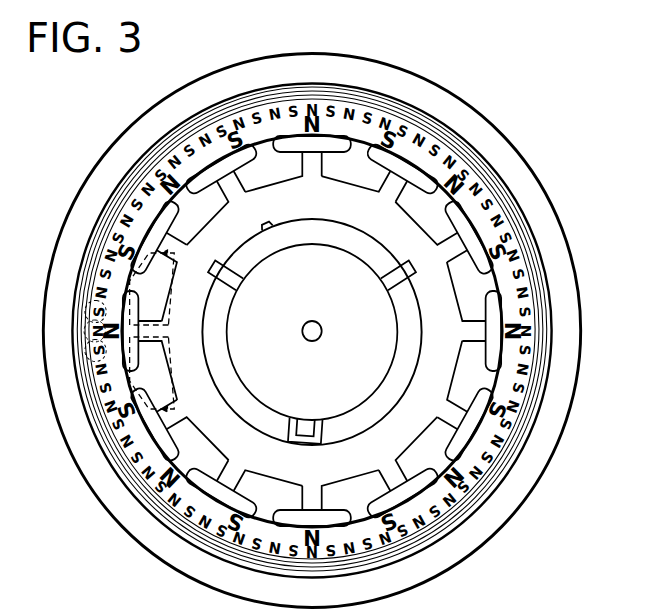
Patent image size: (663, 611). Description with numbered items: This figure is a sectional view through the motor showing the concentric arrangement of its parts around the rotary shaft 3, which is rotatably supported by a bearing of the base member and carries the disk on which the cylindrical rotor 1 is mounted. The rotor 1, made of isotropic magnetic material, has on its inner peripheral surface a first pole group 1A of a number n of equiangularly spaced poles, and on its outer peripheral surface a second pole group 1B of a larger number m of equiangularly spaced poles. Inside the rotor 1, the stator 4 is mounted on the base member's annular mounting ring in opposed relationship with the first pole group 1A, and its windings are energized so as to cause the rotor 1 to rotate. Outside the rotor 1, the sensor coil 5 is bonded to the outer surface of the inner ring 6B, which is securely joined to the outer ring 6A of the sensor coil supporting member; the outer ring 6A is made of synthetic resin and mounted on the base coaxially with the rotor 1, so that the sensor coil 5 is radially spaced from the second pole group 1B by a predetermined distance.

The cylindrical rotor 1 is at (378, 112).
The first pole group 1A is at (320, 100).
The second pole group 1B is at (320, 100).
The rotary shaft 3 is at (322, 330).
The stator 4 is at (414, 163).
The sensor coil 5 is at (468, 163).
The outer ring 6A is at (567, 230).
The inner ring 6B is at (507, 181).